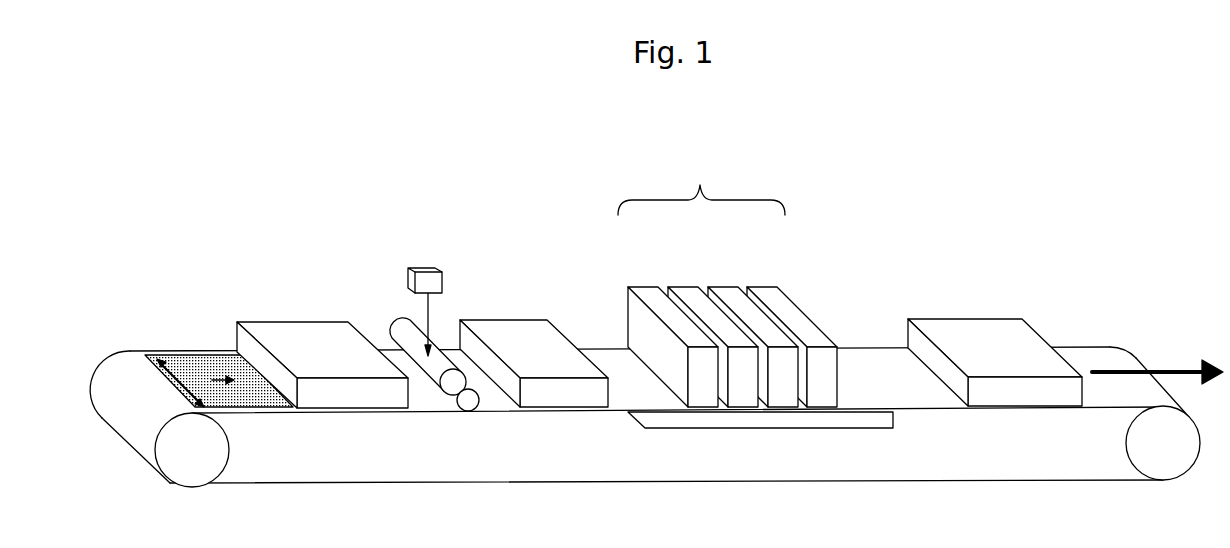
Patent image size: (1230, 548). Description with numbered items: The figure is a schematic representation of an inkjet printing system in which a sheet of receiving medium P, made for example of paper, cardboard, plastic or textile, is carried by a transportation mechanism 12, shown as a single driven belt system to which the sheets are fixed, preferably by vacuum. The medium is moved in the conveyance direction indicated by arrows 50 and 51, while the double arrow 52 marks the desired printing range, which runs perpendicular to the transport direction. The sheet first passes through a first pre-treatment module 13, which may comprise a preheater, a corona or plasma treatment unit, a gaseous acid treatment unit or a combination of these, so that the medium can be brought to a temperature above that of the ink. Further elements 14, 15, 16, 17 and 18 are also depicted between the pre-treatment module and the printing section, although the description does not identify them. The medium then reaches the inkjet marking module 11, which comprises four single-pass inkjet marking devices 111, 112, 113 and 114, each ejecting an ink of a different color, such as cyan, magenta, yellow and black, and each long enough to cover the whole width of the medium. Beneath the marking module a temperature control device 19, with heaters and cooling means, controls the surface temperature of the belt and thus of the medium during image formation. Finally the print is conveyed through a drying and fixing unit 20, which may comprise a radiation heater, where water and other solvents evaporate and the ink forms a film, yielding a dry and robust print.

The inkjet marking module 11 is at (718, 165).
The inkjet marking device 111 is at (765, 292).
The inkjet marking device 112 is at (725, 292).
The inkjet marking device 113 is at (685, 292).
The inkjet marking device 114 is at (645, 292).
The transportation mechanism 12 is at (210, 465).
The first pre-treatment module 13 is at (299, 327).
The coating unit 14 is at (404, 190).
The supply nozzle 15 is at (421, 268).
The coating roller 16 is at (389, 333).
The roller shaft 17 is at (468, 412).
The drying unit 18 is at (523, 322).
The temperature control device 19 is at (777, 424).
The drying and fixing unit 20 is at (972, 322).
The arrow 50 is at (212, 378).
The arrow 51 is at (1143, 367).
The double arrow 52 is at (123, 381).
The receiving medium P is at (145, 405).